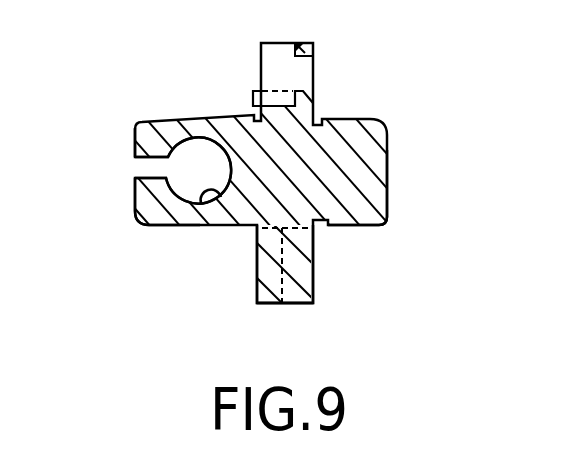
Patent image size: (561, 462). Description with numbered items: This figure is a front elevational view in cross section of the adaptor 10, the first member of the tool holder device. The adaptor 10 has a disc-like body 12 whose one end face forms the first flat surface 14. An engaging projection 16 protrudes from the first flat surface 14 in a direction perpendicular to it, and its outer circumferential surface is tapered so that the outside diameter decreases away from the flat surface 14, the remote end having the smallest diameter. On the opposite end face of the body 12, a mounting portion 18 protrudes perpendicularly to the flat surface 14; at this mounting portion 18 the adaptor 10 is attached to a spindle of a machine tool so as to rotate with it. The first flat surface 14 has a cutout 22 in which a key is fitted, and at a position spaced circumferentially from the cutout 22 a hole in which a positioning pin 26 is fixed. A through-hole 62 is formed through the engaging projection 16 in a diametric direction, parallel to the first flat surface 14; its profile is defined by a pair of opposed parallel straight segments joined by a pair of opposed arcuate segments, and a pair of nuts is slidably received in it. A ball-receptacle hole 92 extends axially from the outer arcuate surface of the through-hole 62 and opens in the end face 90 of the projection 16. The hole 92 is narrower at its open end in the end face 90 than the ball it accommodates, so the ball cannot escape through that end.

The adaptor 10 is at (352, 80).
The body 12 is at (300, 298).
The first flat surface 14 is at (255, 253).
The engaging projection 16 is at (165, 218).
The mounting portion 18 is at (373, 213).
The cutout 22 is at (281, 292).
The positioning pin 26 is at (252, 98).
The through-hole 62 is at (199, 205).
The end face 90 is at (135, 138).
The ball-receptacle hole 92 is at (135, 172).